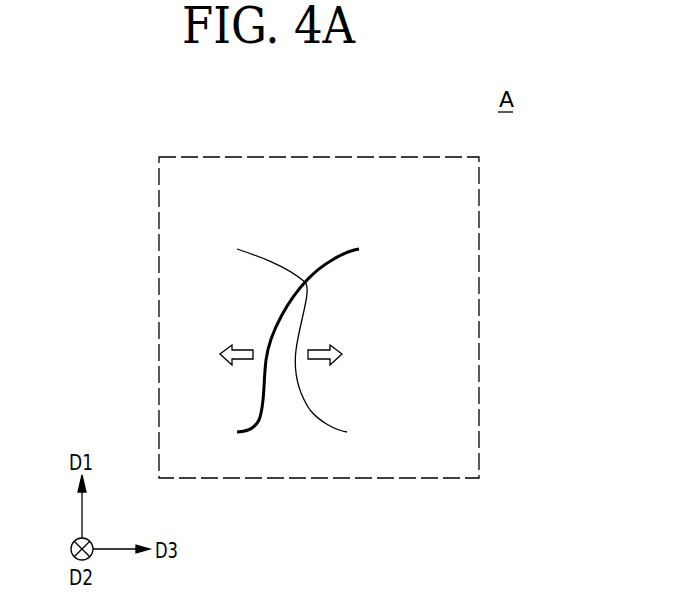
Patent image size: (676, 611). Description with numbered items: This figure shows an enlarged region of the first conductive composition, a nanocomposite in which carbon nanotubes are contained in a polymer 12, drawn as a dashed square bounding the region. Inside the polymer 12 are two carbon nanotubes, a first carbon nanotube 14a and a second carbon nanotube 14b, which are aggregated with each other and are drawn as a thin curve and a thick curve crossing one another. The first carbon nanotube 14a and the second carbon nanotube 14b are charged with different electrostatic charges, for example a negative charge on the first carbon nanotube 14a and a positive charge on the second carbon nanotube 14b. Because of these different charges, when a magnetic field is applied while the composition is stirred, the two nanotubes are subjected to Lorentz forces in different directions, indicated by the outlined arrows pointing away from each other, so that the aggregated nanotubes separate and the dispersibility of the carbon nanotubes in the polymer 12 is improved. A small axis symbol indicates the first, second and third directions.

The polymer 12 is at (466, 288).
The first carbon nanotube 14a is at (257, 257).
The second carbon nanotube 14b is at (347, 248).